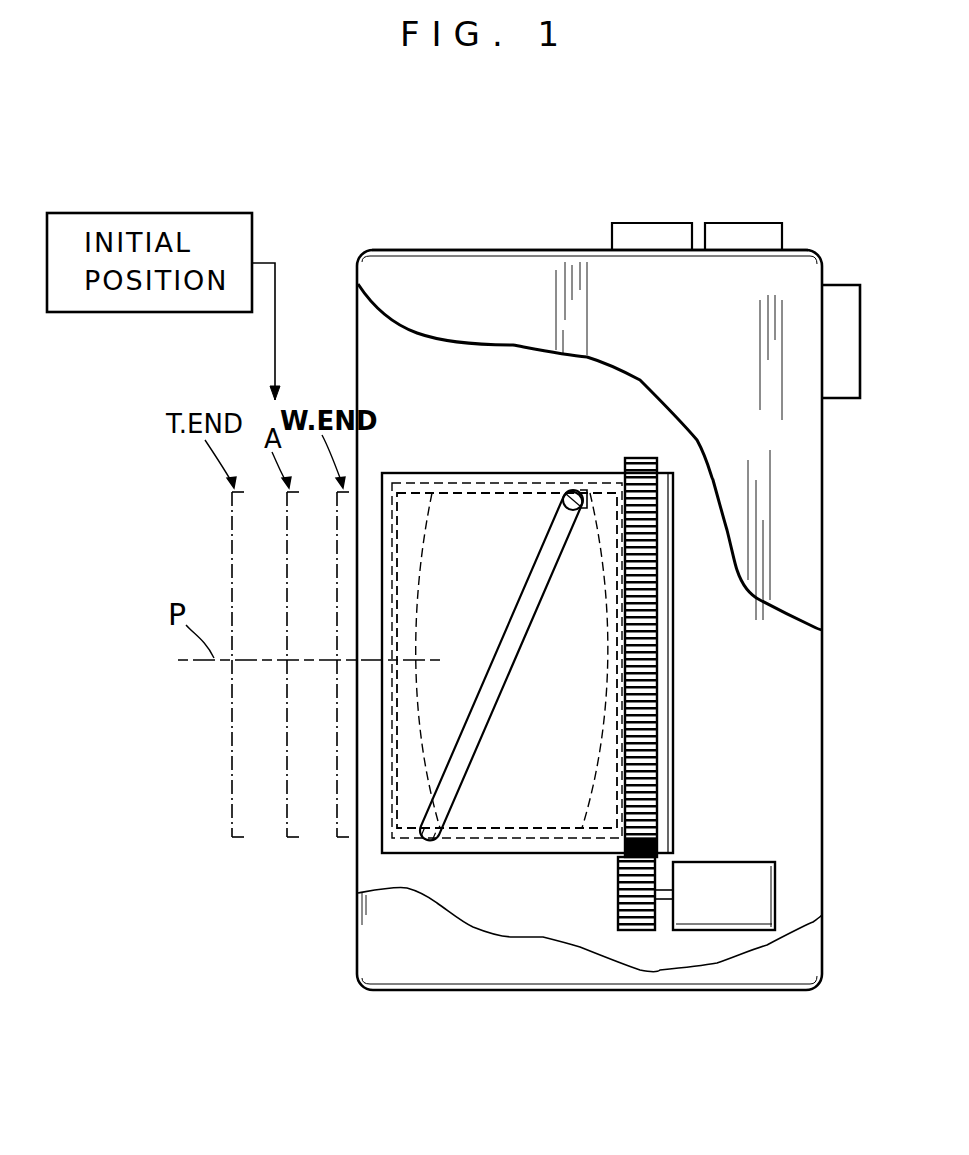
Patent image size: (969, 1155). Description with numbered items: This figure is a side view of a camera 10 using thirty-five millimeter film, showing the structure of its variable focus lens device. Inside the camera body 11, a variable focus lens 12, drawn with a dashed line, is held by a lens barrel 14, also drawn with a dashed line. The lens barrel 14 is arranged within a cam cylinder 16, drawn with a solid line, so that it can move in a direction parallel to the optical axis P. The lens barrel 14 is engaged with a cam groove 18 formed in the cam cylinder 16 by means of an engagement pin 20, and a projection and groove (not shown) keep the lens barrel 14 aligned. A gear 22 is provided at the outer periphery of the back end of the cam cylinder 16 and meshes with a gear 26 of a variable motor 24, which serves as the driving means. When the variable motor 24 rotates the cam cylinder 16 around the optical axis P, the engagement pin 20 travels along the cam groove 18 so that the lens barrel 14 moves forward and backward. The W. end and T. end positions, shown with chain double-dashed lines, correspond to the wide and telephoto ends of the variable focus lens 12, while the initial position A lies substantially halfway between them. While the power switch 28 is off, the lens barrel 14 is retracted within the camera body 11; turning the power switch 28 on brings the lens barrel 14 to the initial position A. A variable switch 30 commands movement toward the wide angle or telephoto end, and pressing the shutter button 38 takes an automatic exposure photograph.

The camera 10 is at (815, 243).
The camera body 11 is at (520, 250).
The variable focus lens 12 is at (458, 512).
The lens barrel 14 is at (232, 815).
The cam cylinder 16 is at (505, 473).
The cam groove 18 is at (512, 650).
The engagement pin 20 is at (569, 491).
The gear 22 is at (657, 697).
The variable motor 24 is at (735, 862).
The gear 26 is at (618, 887).
The power switch 28 is at (757, 223).
The variable switch 30 is at (860, 338).
The shutter button 38 is at (672, 223).